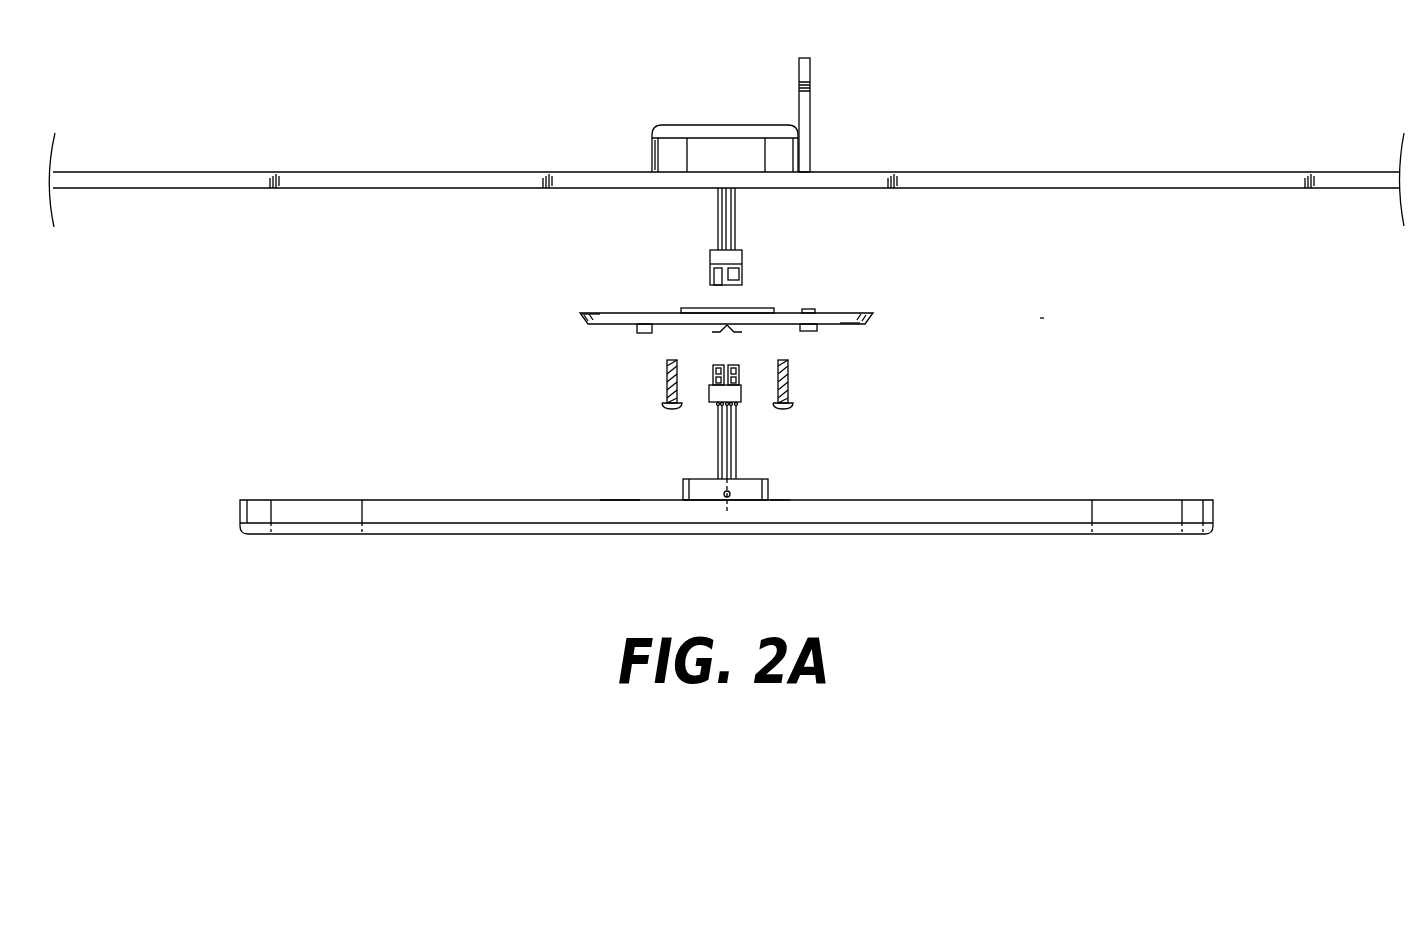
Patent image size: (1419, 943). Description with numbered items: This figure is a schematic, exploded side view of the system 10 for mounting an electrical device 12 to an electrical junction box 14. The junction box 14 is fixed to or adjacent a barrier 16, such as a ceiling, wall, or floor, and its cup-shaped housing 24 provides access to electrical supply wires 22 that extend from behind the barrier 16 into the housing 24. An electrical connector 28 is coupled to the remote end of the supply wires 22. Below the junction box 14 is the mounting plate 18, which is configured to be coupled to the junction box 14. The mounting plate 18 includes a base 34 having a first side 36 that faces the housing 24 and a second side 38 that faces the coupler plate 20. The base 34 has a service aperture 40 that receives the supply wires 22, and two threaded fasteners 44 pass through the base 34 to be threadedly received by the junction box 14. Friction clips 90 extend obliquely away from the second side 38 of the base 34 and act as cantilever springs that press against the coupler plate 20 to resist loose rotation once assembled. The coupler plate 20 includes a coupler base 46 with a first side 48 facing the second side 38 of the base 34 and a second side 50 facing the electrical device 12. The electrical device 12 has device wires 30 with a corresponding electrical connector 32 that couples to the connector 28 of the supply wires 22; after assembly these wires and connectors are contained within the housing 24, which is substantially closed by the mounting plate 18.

The system 10 is at (1049, 318).
The electrical device 12 is at (1164, 535).
The electrical junction box 14 is at (673, 127).
The barrier 16 is at (397, 174).
The mounting plate 18 is at (870, 318).
The coupler plate 20 is at (786, 489).
The electrical supply wires 22 is at (742, 197).
The cup-shaped housing 24 is at (665, 156).
The electrical connector 28 is at (742, 268).
The electrical device wires 30 is at (740, 462).
The electrical connector 32 is at (713, 392).
The base 34 is at (627, 318).
The first side 36 is at (836, 296).
The second side 38 is at (853, 336).
The service aperture 40 is at (702, 292).
The fasteners 44 is at (668, 391).
The coupler base 46 is at (679, 476).
The first side 48 is at (613, 488).
The second side 50 is at (686, 506).
The friction clips 90 is at (645, 333).